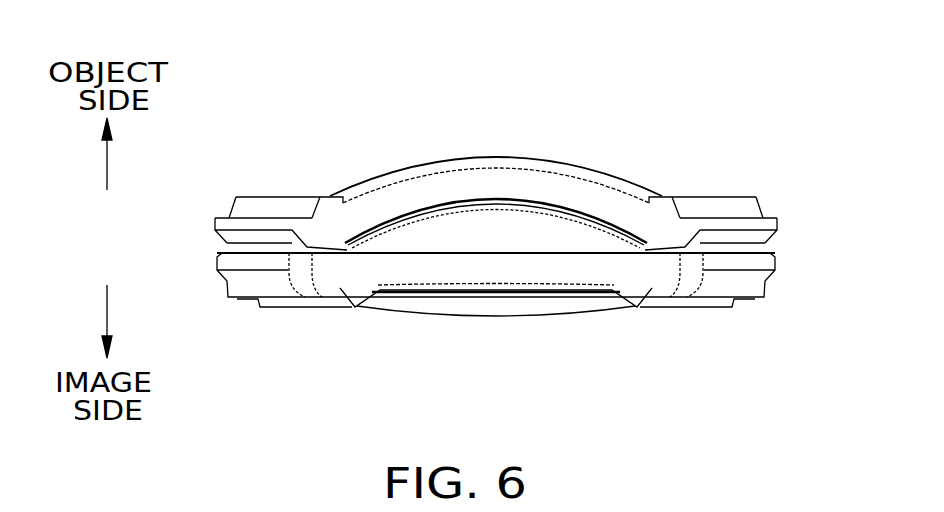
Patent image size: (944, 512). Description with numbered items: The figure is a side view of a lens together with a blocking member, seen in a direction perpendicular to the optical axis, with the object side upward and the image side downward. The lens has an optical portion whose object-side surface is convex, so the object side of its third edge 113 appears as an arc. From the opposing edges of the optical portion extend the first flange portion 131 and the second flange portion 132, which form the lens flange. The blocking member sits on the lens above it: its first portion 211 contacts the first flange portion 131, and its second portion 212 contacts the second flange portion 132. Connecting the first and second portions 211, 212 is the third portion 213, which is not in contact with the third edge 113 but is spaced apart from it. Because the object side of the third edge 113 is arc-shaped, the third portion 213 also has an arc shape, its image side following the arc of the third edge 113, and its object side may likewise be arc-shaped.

The third edge 113 is at (500, 222).
The first flange portion 131 is at (237, 281).
The second flange portion 132 is at (756, 282).
The first portion 211 is at (278, 198).
The second portion 212 is at (756, 208).
The third portion 213 is at (498, 183).